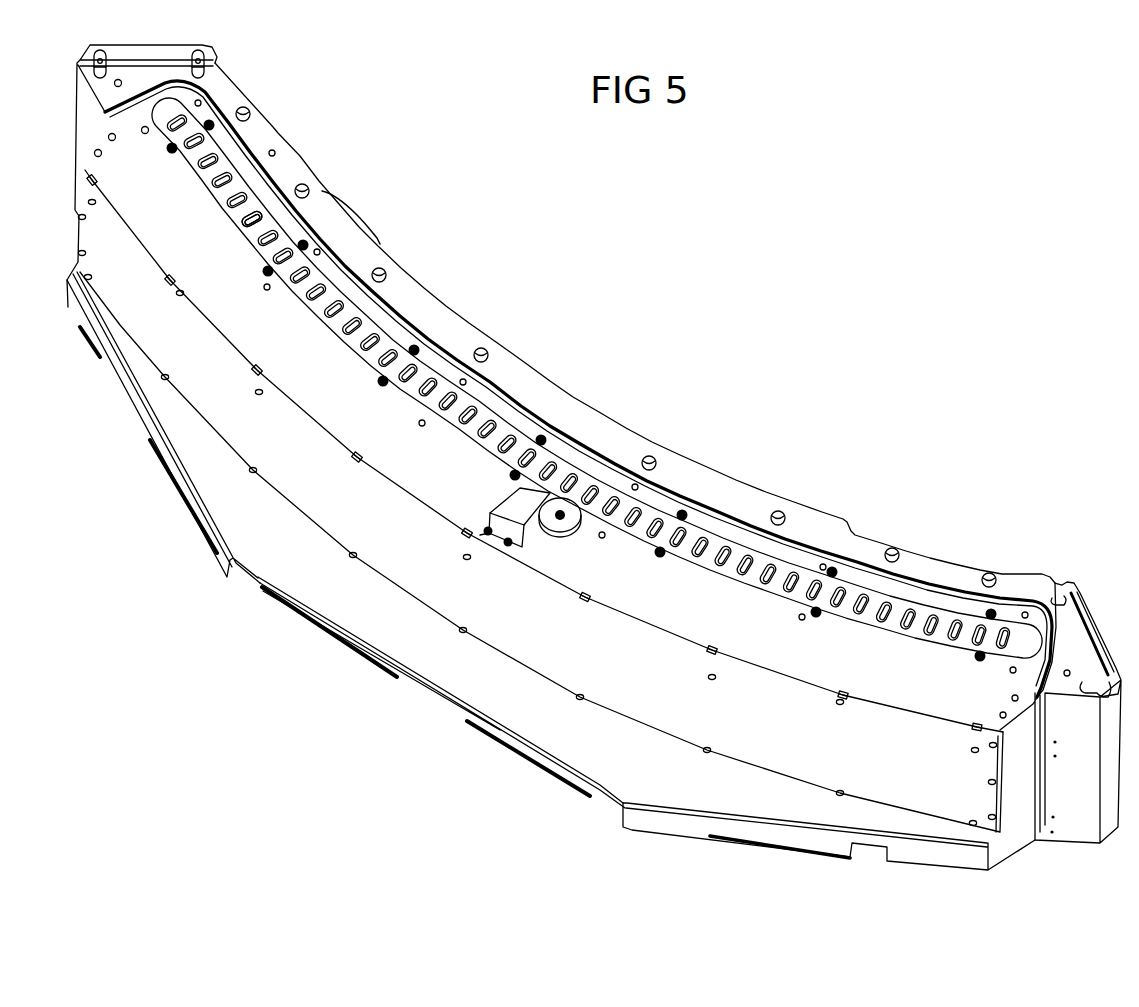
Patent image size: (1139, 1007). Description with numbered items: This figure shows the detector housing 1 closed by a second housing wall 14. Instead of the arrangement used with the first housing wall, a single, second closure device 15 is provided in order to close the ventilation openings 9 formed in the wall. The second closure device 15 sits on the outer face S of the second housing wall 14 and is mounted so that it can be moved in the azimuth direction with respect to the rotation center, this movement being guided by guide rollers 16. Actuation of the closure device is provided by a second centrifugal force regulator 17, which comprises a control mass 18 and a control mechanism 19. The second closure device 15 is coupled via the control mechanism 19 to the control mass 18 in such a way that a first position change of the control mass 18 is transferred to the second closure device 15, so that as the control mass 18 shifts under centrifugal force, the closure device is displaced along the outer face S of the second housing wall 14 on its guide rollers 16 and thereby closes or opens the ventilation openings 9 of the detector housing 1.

The detector housing 1 is at (645, 297).
The ventilation openings 9 is at (596, 503).
The second housing wall 14 is at (912, 668).
The second closure device 15 is at (1020, 635).
The guide rollers 16 is at (833, 568).
The second centrifugal force regulator 17 is at (482, 486).
The control mass 18 is at (523, 497).
The control mechanism 19 is at (559, 537).
The outer face S is at (223, 250).